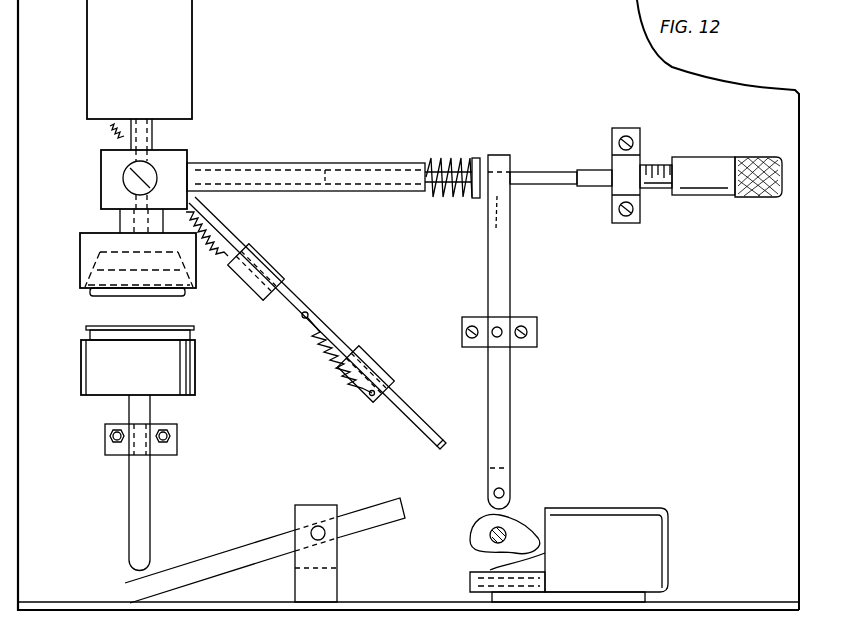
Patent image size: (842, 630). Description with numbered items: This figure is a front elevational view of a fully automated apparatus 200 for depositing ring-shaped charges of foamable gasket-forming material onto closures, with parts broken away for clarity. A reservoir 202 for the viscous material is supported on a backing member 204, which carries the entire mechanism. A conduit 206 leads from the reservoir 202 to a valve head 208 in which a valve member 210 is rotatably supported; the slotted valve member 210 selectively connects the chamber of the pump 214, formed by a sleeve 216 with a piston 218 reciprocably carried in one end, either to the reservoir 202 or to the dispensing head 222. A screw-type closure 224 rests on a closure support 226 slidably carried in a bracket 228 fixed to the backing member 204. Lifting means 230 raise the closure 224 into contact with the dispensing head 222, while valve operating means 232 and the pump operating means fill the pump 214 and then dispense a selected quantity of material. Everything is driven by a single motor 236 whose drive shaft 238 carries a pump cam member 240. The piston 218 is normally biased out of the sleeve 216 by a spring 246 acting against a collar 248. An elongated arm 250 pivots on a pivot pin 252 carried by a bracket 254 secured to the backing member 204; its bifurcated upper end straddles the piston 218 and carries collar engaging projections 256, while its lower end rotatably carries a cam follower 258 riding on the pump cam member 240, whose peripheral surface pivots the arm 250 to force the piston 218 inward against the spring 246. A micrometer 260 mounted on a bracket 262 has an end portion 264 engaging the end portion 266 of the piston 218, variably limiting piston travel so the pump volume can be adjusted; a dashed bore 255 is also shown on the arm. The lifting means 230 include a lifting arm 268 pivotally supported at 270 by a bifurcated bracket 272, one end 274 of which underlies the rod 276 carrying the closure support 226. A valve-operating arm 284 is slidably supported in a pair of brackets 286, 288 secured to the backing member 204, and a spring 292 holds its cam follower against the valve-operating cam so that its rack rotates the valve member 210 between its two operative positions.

The apparatus 200 is at (762, 77).
The reservoir 202 is at (199, 30).
The backing member 204 is at (418, 39).
The conduit 206 is at (154, 135).
The valve head 208 is at (99, 170).
The valve member 210 is at (123, 180).
The pump 214 is at (276, 161).
The sleeve 216 is at (245, 163).
The piston 218 is at (446, 160).
The dispensing head 222 is at (78, 256).
The screw-type closure 224 is at (100, 333).
The closure support 226 is at (79, 365).
The bracket 228 is at (180, 432).
The lifting means 230 is at (283, 537).
The valve operating means 232 is at (329, 312).
The motor 236 is at (641, 507).
The drive shaft 238 is at (506, 529).
The pump cam member 240 is at (480, 540).
The spring 246 is at (446, 194).
The collar 248 is at (478, 157).
The elongated arm 250 is at (505, 408).
The pivot pin 252 is at (495, 340).
The bracket 254 is at (540, 322).
The bore 255 is at (492, 222).
The collar engaging projections 256 is at (490, 177).
The cam follower 258 is at (486, 492).
The micrometer 260 is at (712, 163).
The bracket 262 is at (634, 190).
The end portion 264 is at (600, 170).
The end portion 266 is at (558, 176).
The lifting arm 268 is at (360, 513).
The pivot 270 is at (316, 526).
The bifurcated bracket 272 is at (330, 587).
The end of the lifting arm 274 is at (124, 588).
The rod 276 is at (152, 500).
The valve-operating arm 284 is at (225, 245).
The bracket 286 is at (287, 266).
The bracket 288 is at (396, 360).
The spring 292 is at (340, 372).